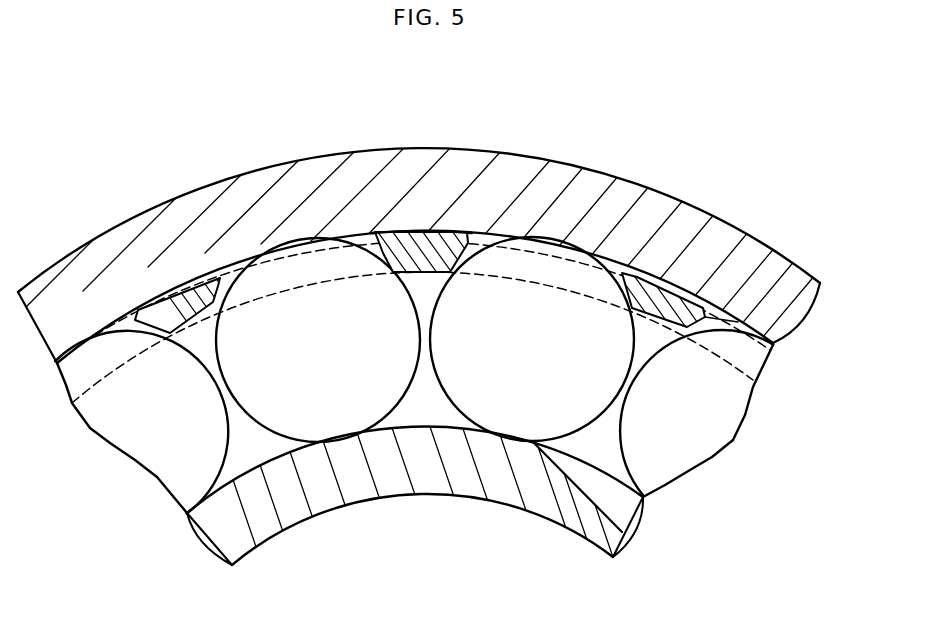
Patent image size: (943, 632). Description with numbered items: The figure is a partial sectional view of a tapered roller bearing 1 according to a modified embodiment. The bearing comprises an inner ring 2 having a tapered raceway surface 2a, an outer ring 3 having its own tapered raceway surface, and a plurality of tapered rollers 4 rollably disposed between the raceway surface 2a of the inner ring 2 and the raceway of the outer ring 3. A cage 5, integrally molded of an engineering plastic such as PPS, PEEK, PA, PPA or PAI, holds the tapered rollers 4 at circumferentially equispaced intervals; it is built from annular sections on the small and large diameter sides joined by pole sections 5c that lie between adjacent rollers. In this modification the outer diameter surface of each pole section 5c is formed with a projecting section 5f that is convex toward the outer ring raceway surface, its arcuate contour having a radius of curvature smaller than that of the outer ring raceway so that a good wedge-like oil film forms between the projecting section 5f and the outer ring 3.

The tapered roller bearing 1 is at (419, 331).
The inner ring 2 is at (436, 508).
The raceway surface 2a is at (580, 452).
The outer ring 3 is at (792, 317).
The tapered roller 4 is at (515, 260).
The cage 5 is at (440, 224).
The pole section 5c is at (435, 240).
The projecting section 5f is at (410, 227).